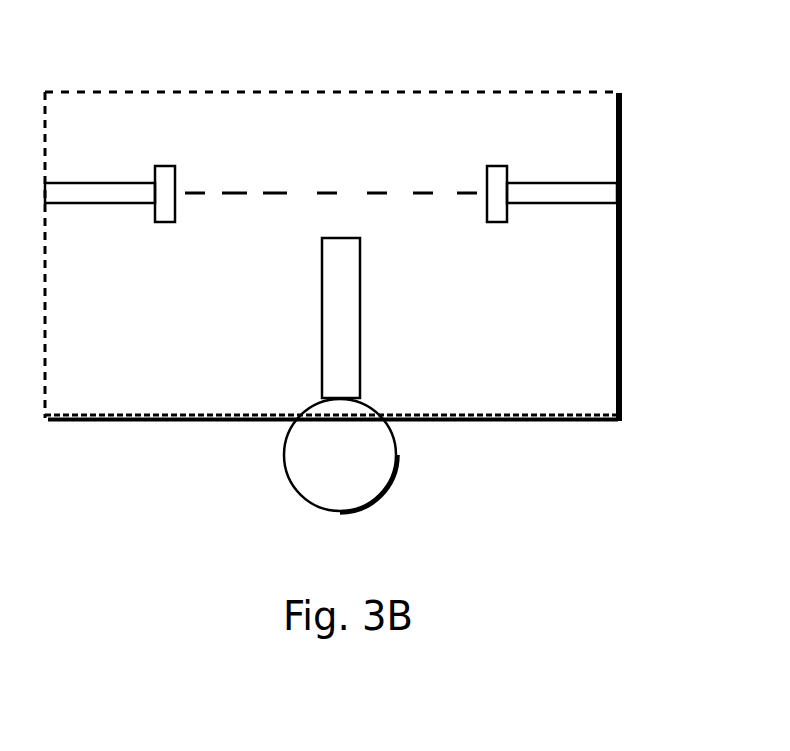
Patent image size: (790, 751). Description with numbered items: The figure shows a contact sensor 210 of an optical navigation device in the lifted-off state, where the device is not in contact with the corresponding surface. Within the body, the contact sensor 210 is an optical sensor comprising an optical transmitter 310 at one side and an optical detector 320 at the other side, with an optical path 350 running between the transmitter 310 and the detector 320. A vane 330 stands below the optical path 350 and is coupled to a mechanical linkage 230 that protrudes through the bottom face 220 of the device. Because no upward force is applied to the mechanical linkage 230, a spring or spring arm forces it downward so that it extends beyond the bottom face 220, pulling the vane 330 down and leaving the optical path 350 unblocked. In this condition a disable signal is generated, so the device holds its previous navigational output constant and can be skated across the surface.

The contact sensor 210 is at (702, 38).
The bottom face 220 is at (562, 422).
The mechanical linkage 230 is at (400, 457).
The optical transmitter 310 is at (158, 152).
The optical detector 320 is at (497, 148).
The vane 330 is at (365, 298).
The optical path 350 is at (290, 180).